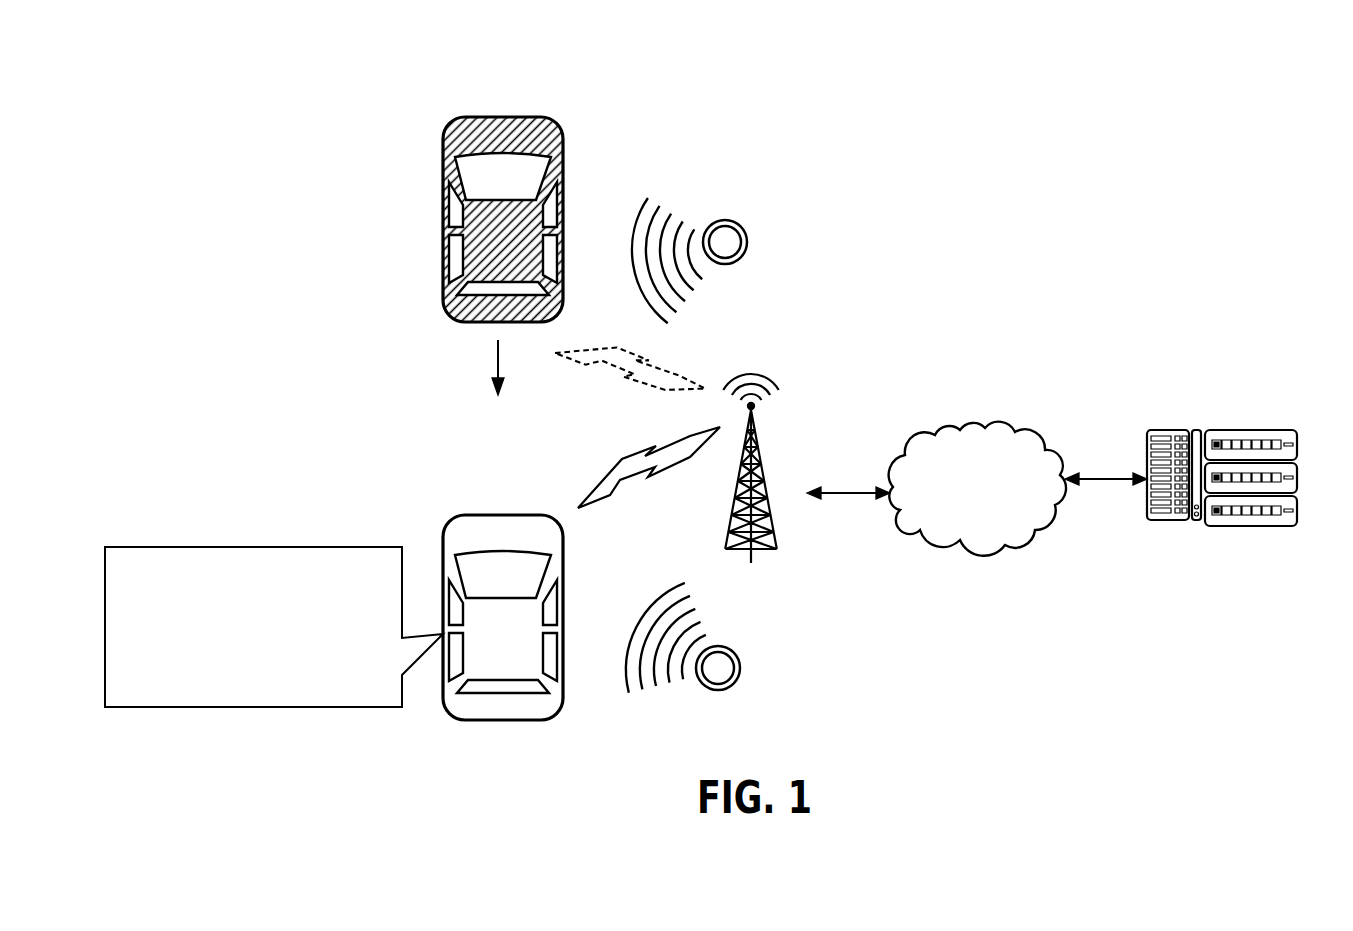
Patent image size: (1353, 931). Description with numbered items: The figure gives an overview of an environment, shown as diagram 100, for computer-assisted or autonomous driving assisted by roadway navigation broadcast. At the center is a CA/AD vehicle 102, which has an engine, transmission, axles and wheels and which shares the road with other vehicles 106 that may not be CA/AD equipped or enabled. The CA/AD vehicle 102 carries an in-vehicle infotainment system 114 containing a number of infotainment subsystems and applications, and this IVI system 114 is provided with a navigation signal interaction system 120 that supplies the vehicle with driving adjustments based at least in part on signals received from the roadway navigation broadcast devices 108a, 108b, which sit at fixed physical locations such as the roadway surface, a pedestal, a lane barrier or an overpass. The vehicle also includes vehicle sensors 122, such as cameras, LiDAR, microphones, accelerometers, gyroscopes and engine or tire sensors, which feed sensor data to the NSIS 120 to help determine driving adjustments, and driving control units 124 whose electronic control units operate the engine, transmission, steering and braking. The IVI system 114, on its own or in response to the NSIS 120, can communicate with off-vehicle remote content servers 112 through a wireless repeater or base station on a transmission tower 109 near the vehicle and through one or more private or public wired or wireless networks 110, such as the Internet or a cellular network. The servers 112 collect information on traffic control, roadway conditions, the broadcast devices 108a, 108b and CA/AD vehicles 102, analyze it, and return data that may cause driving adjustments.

The environment 100 is at (1070, 170).
The CA/AD vehicle 102 is at (446, 516).
The other vehicle 106 is at (445, 117).
The navigation broadcast device 108a is at (735, 222).
The navigation broadcast device 108b is at (740, 653).
The transmission tower 109 is at (775, 374).
The networks 110 is at (1025, 428).
The remote content servers 112 is at (1210, 525).
The in-vehicle infotainment system 114 is at (236, 566).
The navigation signal interaction system 120 is at (251, 602).
The vehicle sensors 122 is at (186, 639).
The driving control units 124 is at (200, 675).